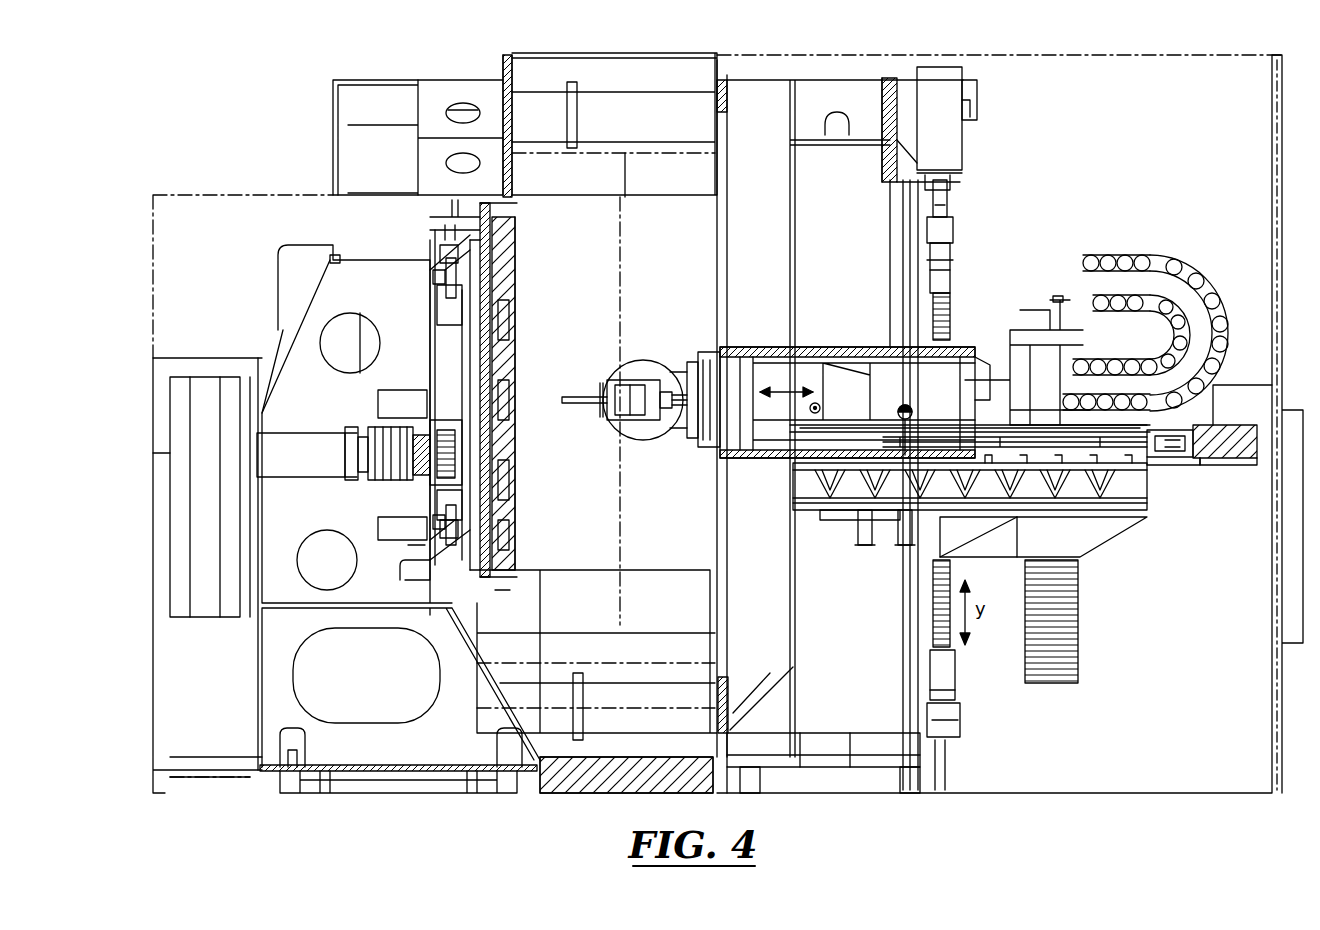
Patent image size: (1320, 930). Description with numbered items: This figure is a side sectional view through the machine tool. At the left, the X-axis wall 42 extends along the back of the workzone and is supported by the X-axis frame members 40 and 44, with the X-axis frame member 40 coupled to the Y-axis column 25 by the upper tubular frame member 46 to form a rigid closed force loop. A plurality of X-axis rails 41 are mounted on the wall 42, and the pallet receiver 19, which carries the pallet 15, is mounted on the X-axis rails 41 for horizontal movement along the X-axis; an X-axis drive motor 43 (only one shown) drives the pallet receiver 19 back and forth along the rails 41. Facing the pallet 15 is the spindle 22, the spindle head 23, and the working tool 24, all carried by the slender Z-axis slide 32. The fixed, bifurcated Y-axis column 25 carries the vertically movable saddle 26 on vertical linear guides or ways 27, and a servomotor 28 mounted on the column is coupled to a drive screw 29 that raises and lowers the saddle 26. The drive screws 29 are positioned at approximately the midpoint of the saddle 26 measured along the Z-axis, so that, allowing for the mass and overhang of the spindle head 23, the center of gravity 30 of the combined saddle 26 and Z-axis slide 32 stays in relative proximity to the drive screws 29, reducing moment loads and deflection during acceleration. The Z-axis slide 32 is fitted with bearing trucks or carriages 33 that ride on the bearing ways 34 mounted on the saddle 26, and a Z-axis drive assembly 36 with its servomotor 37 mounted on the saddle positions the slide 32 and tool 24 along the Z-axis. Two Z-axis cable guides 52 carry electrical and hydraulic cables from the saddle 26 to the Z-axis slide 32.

The pallet 15 is at (497, 312).
The pallet receiver 19 is at (487, 427).
The spindle 22 is at (593, 370).
The spindle head 23 is at (680, 357).
The working tool 24 is at (572, 392).
The Y-axis column 25 is at (825, 75).
The saddle 26 is at (1073, 493).
The vertical linear guides or ways 27 is at (920, 260).
The servomotor 28 is at (950, 142).
The drive screw 29 is at (950, 310).
The center of gravity 30 is at (897, 403).
The Z-axis slide 32 is at (873, 330).
The bearing trucks or carriages 33 is at (870, 427).
The bearing ways 34 is at (910, 440).
The Z-axis drive assembly 36 is at (1213, 413).
The servomotor 37 is at (1223, 450).
The X-axis frame member 40 is at (380, 98).
The X-axis rails 41 is at (437, 280).
The X-axis wall 42 is at (478, 348).
The X-axis drive motor 43 is at (375, 433).
The X-axis frame member 44 is at (295, 340).
The upper tubular frame member 46 is at (658, 105).
The Z-axis cable guides 52 is at (1127, 330).